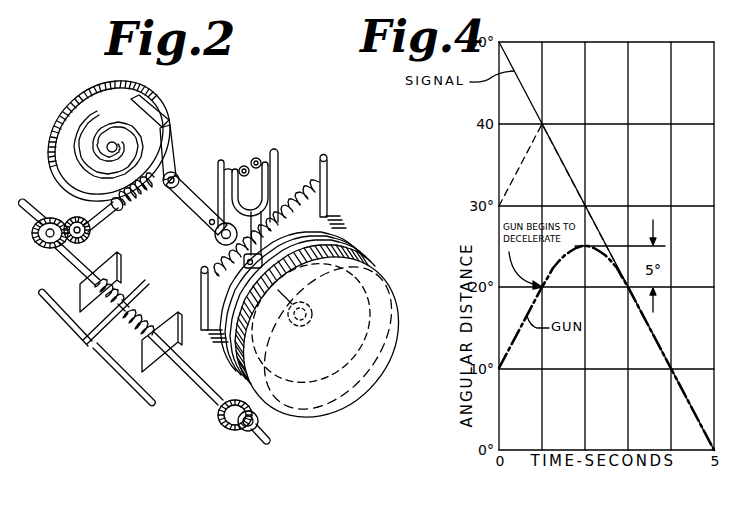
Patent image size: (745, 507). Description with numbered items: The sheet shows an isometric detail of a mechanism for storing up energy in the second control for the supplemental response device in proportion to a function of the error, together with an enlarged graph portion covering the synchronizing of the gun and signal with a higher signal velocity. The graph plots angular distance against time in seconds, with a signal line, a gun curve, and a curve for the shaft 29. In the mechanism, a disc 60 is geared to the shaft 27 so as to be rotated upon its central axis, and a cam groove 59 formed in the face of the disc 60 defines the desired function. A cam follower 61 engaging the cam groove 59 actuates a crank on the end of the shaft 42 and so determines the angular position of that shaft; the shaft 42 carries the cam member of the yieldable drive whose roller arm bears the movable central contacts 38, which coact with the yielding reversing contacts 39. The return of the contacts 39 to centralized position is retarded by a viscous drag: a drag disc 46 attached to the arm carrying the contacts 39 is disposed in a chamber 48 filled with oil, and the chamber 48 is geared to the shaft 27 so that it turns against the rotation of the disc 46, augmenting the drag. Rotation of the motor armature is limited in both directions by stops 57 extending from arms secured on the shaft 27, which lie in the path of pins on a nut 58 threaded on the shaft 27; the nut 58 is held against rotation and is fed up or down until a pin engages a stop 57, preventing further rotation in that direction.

In FIG. 2, the shaft 27 is at (210, 389).
In FIG. 4, the shaft 29 is at (507, 192).
In FIG. 2, the movable central contacts 38 is at (256, 158).
In FIG. 2, the yielding reversing contacts 39 is at (270, 153).
In FIG. 2, the shaft 42 is at (190, 197).
In FIG. 2, the drag disc 46 is at (390, 311).
In FIG. 2, the chamber 48 is at (358, 248).
In FIG. 2, the stops 57 is at (82, 282).
In FIG. 2, the nut 58 is at (148, 288).
In FIG. 2, the cam groove 59 is at (68, 155).
In FIG. 2, the disc 60 is at (151, 101).
In FIG. 2, the cam follower 61 is at (165, 121).